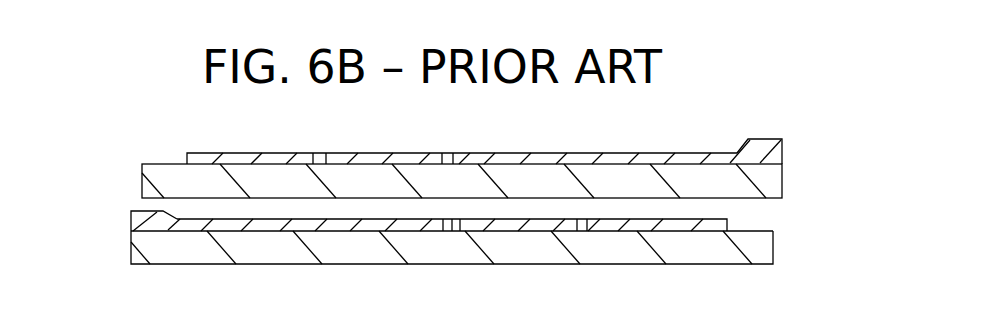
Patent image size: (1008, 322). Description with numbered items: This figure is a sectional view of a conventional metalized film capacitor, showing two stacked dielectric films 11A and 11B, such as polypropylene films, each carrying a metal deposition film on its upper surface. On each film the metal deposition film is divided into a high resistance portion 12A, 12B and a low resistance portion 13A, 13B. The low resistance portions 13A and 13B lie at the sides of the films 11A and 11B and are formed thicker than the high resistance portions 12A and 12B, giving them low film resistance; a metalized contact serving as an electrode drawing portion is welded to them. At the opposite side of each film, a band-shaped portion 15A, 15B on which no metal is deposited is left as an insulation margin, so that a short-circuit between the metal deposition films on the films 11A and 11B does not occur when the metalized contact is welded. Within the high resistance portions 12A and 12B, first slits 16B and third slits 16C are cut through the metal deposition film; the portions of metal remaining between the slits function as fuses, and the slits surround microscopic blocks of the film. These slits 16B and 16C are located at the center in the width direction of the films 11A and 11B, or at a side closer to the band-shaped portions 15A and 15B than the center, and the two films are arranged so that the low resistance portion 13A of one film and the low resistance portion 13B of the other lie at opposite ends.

The dielectric film 11A is at (773, 182).
The dielectric film 11B is at (763, 249).
The high resistance portion 12A is at (470, 155).
The high resistance portion 12B is at (465, 225).
The low resistance portion 13A is at (778, 140).
The low resistance portion 13B is at (133, 212).
The band-shaped portion 15A is at (172, 164).
The band-shaped portion 15B is at (748, 230).
The first slits 16B is at (443, 152).
The third slits 16C is at (305, 153).